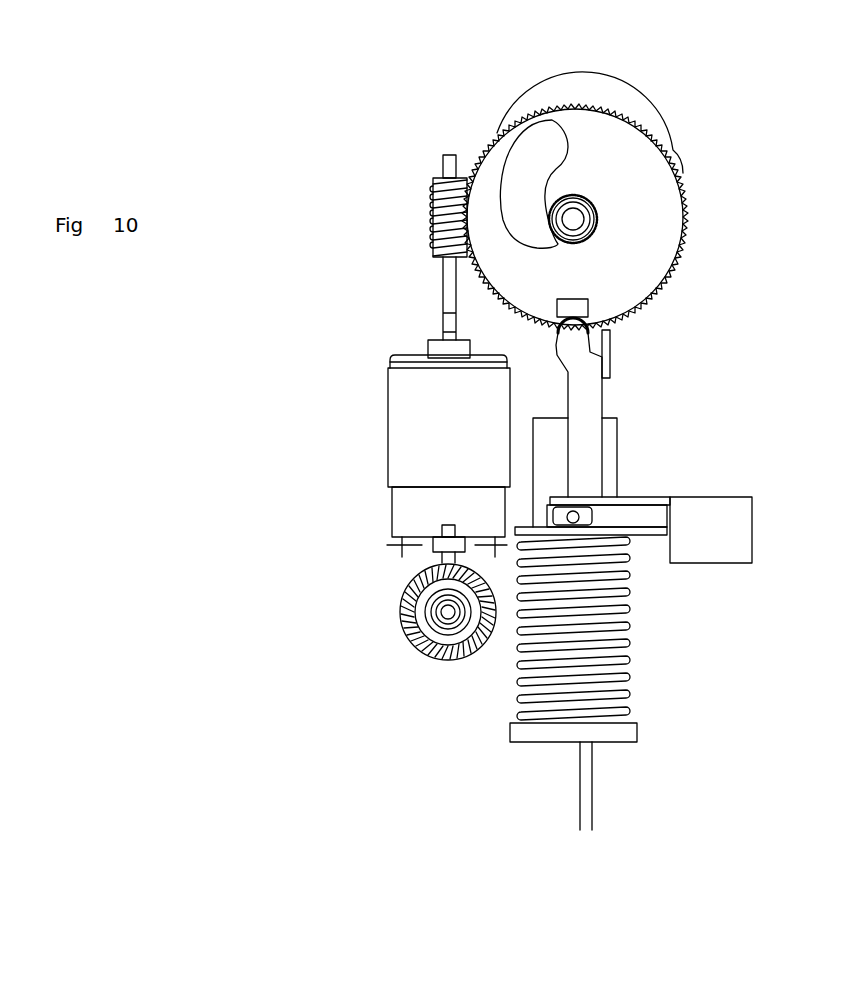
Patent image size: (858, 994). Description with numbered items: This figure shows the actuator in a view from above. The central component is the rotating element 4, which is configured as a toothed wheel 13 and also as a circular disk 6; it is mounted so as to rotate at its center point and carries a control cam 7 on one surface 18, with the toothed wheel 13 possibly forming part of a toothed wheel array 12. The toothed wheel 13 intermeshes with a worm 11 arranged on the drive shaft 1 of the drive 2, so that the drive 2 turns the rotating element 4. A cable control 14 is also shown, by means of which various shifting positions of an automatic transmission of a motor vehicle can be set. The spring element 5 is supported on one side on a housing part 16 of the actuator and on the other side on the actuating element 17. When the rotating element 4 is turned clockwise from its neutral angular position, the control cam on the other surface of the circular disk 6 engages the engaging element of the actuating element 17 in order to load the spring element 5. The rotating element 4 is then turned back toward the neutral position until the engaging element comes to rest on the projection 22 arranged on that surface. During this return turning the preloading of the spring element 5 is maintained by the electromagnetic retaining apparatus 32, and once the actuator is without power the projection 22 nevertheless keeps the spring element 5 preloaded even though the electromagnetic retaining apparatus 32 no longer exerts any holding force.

The drive shaft 1 is at (443, 165).
The drive 2 is at (402, 415).
The rotating element 4 is at (631, 216).
The spring element 5 is at (620, 650).
The circular disk 6 is at (525, 147).
The control cam 7 is at (620, 93).
The worm 11 is at (435, 217).
The toothed wheel array 12 is at (573, 219).
The toothed wheel 13 is at (575, 217).
The cable control 14 is at (583, 775).
The housing part 16 is at (517, 728).
The actuating element 17 is at (593, 407).
The surface 18 is at (650, 277).
The projection 22 is at (577, 307).
The electromagnetic retaining apparatus 32 is at (755, 483).